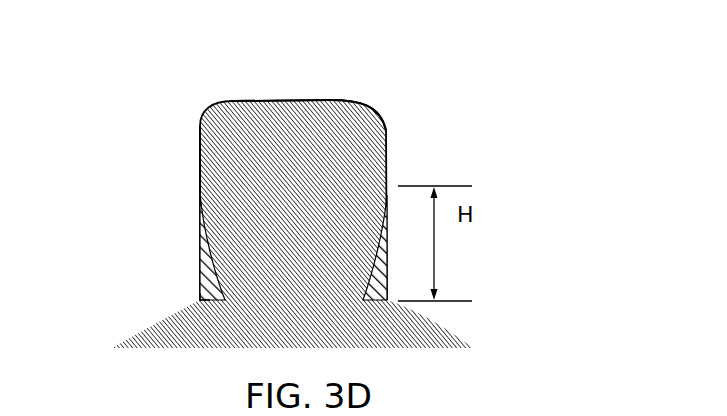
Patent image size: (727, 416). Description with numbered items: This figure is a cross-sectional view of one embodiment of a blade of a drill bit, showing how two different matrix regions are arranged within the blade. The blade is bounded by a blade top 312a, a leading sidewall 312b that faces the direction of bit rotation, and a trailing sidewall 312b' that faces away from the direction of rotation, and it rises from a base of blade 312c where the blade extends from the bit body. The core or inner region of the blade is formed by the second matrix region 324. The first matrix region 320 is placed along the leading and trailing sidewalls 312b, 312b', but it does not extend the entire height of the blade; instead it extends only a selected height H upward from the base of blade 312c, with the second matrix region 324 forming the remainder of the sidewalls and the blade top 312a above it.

The blade top 312a is at (328, 83).
The leading sidewall 312b is at (117, 153).
The trailing sidewall 312b' is at (452, 197).
The base of blade 312c is at (184, 298).
The first matrix region 320 is at (202, 247).
The second matrix region 324 is at (322, 227).